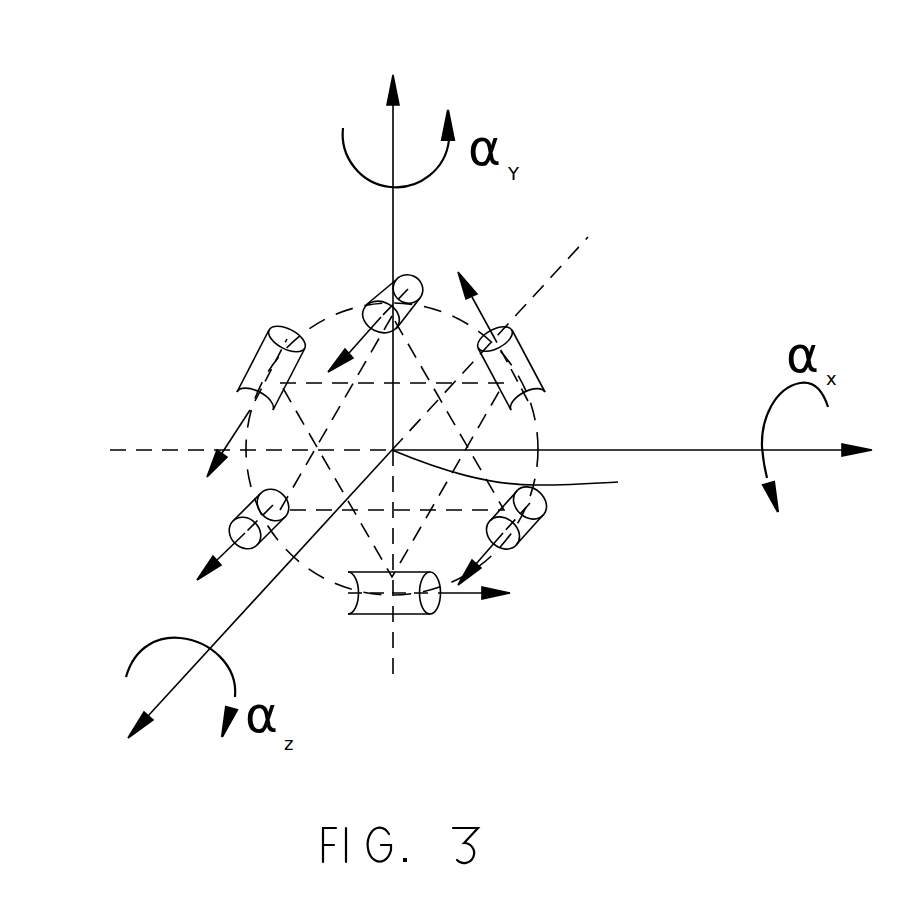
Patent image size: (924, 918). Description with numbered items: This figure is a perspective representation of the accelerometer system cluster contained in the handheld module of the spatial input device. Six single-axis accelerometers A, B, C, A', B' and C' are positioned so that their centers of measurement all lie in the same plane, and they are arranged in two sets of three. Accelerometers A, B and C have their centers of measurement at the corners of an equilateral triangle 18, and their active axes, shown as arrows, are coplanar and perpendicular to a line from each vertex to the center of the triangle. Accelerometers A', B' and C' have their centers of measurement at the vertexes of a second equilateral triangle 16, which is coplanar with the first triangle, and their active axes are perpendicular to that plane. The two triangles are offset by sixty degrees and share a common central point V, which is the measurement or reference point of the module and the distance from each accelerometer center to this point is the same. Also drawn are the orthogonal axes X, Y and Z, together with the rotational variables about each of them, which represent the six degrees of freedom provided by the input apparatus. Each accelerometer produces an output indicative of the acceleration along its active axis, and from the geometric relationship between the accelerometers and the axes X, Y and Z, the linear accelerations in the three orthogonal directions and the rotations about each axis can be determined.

The second equilateral triangle 16 is at (300, 513).
The equilateral triangle 18 is at (482, 427).
The accelerometer A is at (429, 617).
The accelerometer B is at (511, 341).
The accelerometer C is at (258, 399).
The accelerometer A' is at (378, 315).
The accelerometer B' is at (234, 531).
The accelerometer C' is at (524, 532).
The X axis X is at (499, 435).
The Y axis Y is at (381, 360).
The Z axis Z is at (327, 492).
The common central point V is at (518, 473).